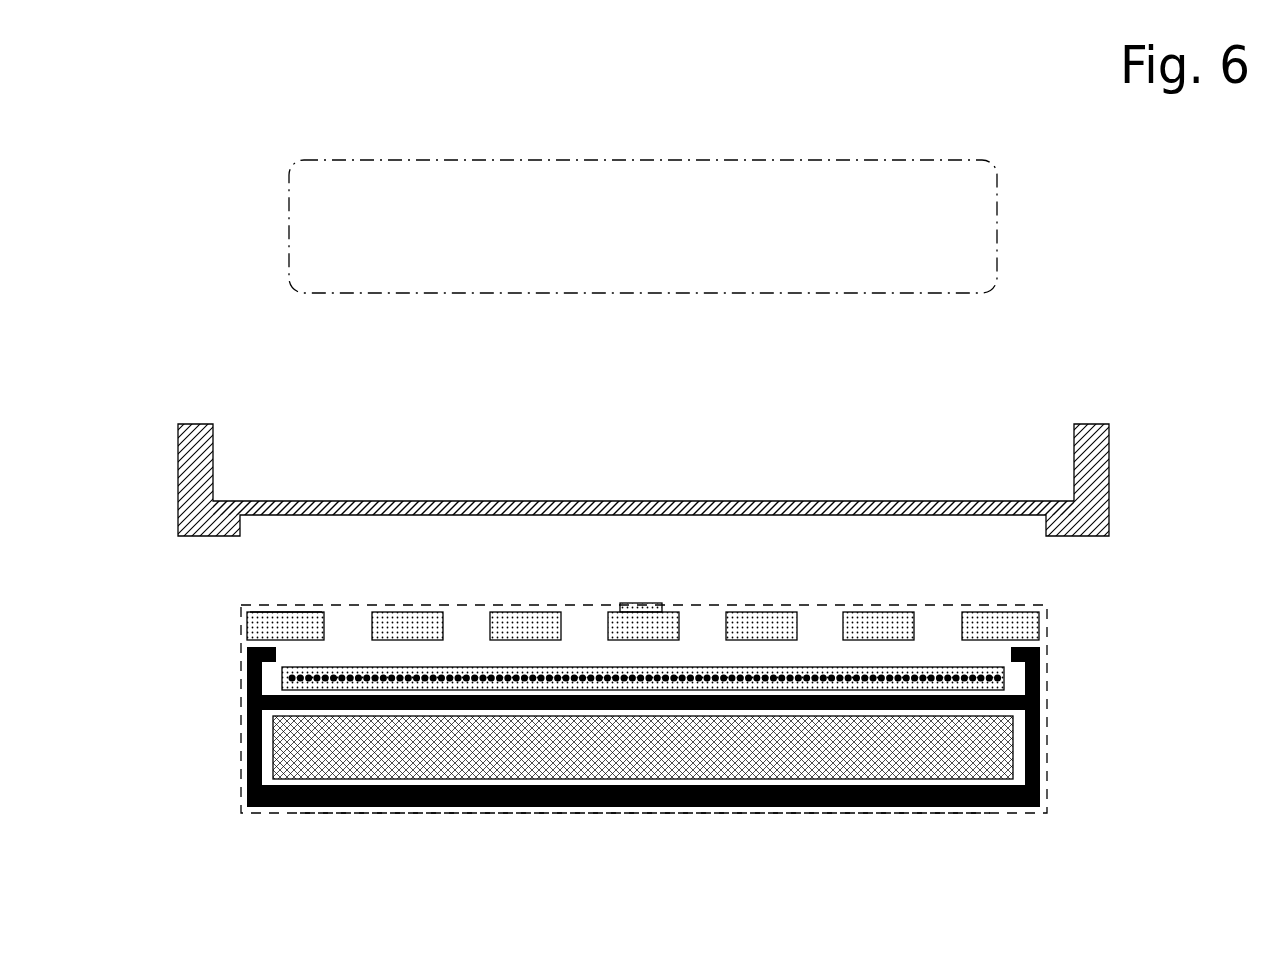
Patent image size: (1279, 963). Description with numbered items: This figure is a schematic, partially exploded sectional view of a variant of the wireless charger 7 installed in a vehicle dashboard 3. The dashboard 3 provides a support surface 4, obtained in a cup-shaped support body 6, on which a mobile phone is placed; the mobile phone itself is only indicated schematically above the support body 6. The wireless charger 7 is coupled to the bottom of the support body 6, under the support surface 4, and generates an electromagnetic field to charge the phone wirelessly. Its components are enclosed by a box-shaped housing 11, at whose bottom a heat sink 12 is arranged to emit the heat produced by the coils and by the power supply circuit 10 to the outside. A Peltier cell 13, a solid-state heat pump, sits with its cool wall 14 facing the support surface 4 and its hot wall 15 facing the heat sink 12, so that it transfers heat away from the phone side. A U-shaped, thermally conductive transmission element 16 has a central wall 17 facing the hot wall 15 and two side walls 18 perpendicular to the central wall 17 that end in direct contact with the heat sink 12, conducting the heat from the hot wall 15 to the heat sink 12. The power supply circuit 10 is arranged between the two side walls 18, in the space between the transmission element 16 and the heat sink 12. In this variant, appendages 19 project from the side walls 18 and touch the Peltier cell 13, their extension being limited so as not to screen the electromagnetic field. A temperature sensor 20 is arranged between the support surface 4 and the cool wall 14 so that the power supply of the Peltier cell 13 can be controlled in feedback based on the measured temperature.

The dashboard 3 is at (600, 160).
The support surface 4 is at (254, 502).
The support body 6 is at (643, 390).
The wireless charger 7 is at (641, 724).
The power supply circuit 10 is at (490, 752).
The housing 11 is at (718, 815).
The heat sink 12 is at (906, 808).
The Peltier cell 13 is at (270, 627).
The cool wall 14 is at (296, 612).
The hot wall 15 is at (302, 646).
The transmission element 16 is at (205, 700).
The central wall 17 is at (593, 695).
The side walls 18 is at (641, 769).
The appendages 19 is at (250, 666).
The temperature sensor 20 is at (645, 605).